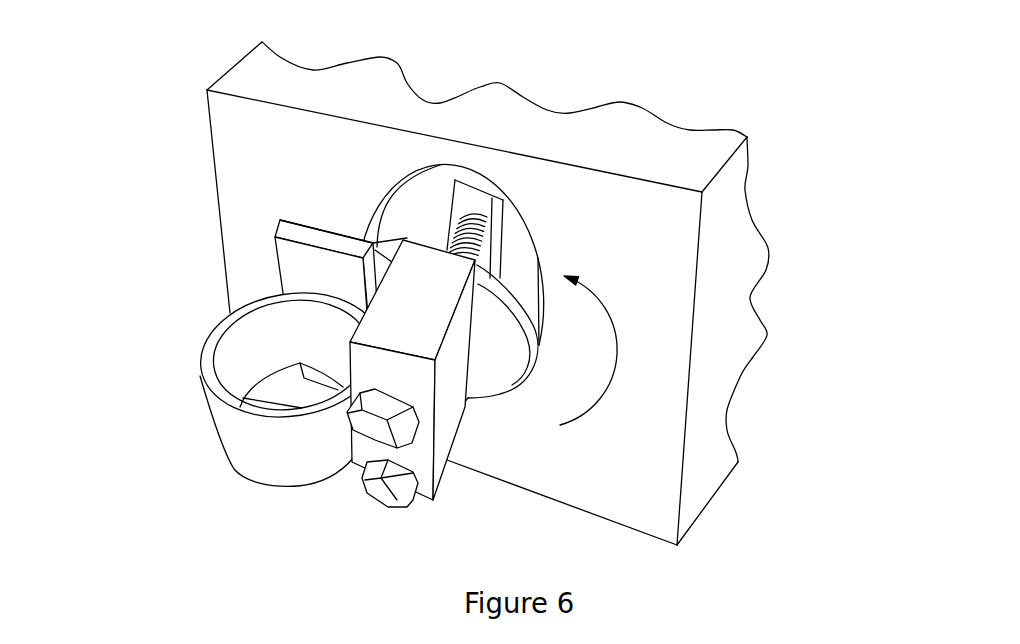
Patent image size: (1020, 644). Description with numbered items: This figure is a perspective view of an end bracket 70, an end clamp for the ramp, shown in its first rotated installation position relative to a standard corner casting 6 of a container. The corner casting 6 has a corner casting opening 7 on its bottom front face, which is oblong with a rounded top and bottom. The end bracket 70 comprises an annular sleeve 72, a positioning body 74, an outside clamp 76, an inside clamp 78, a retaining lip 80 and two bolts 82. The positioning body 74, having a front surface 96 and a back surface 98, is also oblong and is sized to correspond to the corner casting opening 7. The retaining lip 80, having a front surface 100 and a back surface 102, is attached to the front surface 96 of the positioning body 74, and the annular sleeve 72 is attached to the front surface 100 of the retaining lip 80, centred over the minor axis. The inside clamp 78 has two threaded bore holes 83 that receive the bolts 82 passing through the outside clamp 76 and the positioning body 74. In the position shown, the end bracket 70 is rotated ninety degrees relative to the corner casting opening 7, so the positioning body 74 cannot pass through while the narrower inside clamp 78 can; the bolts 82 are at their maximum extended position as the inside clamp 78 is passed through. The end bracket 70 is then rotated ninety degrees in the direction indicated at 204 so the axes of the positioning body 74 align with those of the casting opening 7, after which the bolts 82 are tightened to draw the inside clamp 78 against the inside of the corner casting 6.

The corner casting 6 is at (658, 297).
The corner casting opening 7 is at (395, 197).
The end bracket 70 is at (264, 293).
The annular sleeve 72 is at (272, 457).
The positioning body 74 is at (513, 357).
The outside clamp 76 is at (415, 283).
The inside clamp 78 is at (481, 205).
The retaining lip 80 is at (259, 166).
The bolts 82 is at (377, 427).
The threaded bore holes 83 is at (477, 260).
The front surface 96 is at (488, 373).
The back surface 98 is at (513, 285).
The front surface 100 is at (307, 267).
The back surface 102 is at (316, 230).
The direction of rotation 204 is at (615, 372).